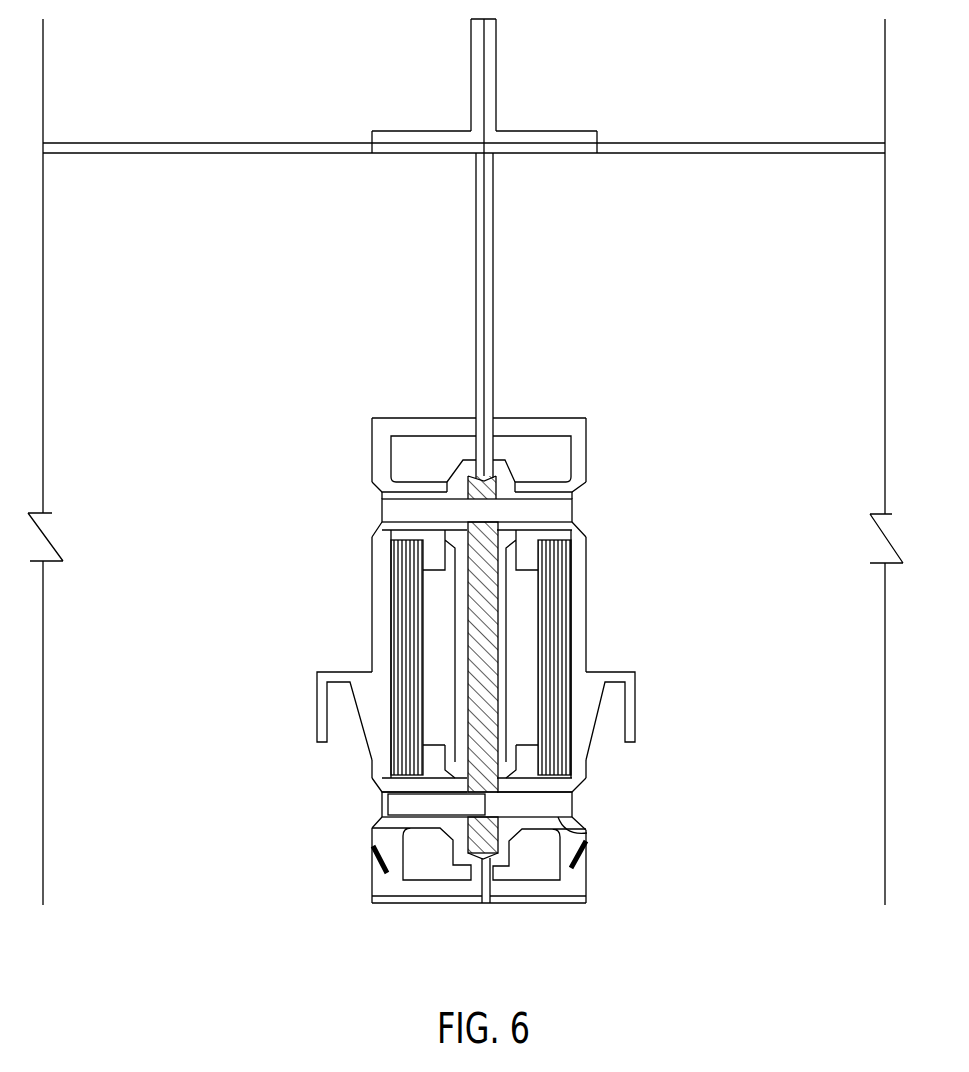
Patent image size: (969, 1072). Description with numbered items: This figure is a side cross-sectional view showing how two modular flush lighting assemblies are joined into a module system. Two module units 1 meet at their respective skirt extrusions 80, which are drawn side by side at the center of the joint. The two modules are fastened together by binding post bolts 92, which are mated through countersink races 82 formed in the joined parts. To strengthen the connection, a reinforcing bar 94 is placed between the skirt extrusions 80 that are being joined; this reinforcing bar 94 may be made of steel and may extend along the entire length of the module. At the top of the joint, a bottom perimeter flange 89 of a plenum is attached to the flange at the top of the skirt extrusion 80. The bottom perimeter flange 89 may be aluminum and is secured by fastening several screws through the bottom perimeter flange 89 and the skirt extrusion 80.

The module unit 1 is at (204, 197).
The skirt extrusion 80 is at (474, 278).
The countersink race 82 is at (586, 842).
The bottom perimeter flange 89 is at (472, 66).
The binding post bolt 92 is at (582, 510).
The reinforcing bar 94 is at (484, 598).